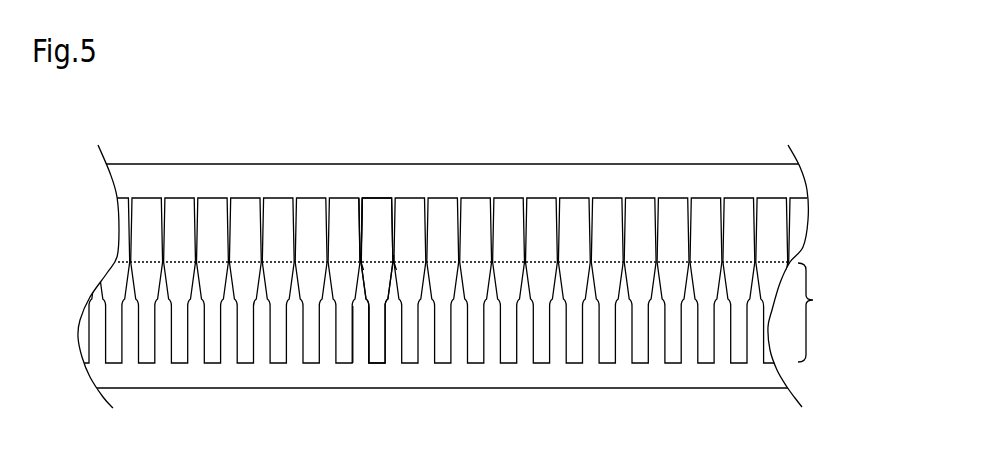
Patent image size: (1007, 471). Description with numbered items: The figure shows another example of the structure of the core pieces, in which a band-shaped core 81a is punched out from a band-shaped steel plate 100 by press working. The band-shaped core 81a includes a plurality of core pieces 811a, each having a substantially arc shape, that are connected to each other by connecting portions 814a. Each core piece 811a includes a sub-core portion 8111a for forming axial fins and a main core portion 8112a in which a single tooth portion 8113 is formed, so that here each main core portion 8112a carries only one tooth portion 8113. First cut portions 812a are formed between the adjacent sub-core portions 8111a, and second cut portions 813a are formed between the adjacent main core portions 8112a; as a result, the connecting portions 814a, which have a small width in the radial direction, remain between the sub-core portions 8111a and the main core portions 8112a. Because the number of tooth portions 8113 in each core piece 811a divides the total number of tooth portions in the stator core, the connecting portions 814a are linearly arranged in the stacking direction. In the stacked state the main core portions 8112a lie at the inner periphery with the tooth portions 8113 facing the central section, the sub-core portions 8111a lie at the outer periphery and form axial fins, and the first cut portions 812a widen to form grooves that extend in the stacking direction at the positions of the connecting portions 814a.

The band-shaped steel plate 100 is at (655, 164).
The band-shaped core 81a is at (741, 196).
The core piece 811a is at (377, 207).
The first cut portion 812a is at (360, 194).
The second cut portion 813a is at (360, 308).
The connecting portion 814a is at (368, 259).
The sub-core portion 8111a is at (503, 230).
The main core portion 8112a is at (838, 312).
The tooth portion 8113 is at (377, 342).